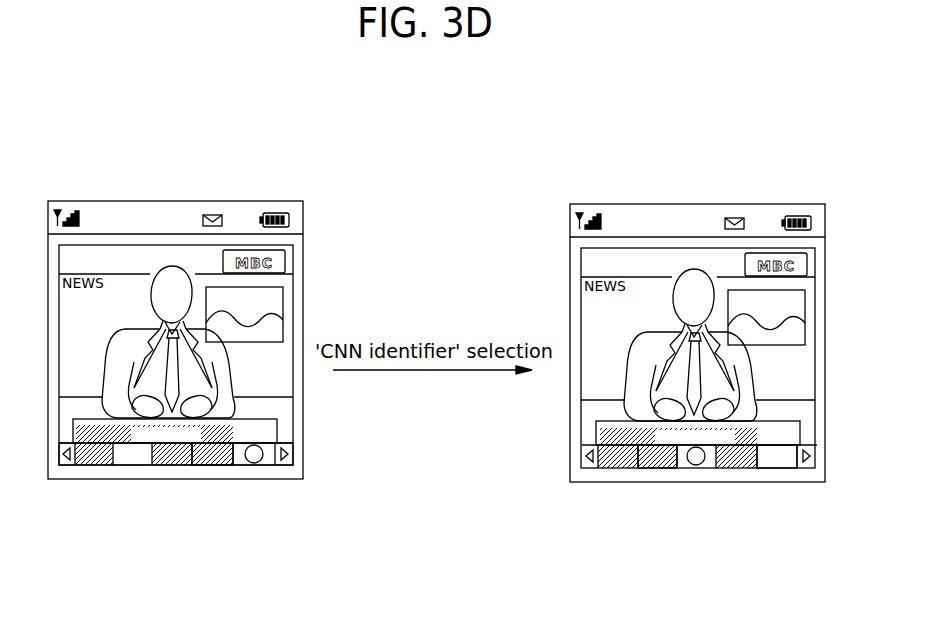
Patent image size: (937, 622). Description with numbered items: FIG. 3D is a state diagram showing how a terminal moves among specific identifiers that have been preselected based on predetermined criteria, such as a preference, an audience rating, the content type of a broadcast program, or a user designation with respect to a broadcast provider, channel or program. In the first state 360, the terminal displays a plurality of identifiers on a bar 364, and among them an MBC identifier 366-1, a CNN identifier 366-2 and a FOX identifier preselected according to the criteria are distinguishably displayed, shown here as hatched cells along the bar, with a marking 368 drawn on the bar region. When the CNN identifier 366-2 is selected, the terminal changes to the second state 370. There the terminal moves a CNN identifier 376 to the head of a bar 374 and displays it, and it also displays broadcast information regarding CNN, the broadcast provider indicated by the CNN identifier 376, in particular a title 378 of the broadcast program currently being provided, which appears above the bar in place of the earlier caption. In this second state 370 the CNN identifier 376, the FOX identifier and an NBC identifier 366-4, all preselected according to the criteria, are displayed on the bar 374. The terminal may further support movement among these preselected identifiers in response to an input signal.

The display state before selection 360 is at (178, 366).
The display state after CNN identifier selection 370 is at (697, 350).
The bar 364 is at (267, 467).
The MBC identifier 366-1 is at (100, 465).
The CNN identifier 366-2 is at (167, 465).
The NBC identifier 366-4 is at (752, 468).
The selection cursor on channel identifier 368 is at (213, 465).
The bar 374 is at (777, 468).
The CNN identifier 376 is at (610, 468).
The title 378 is at (648, 468).